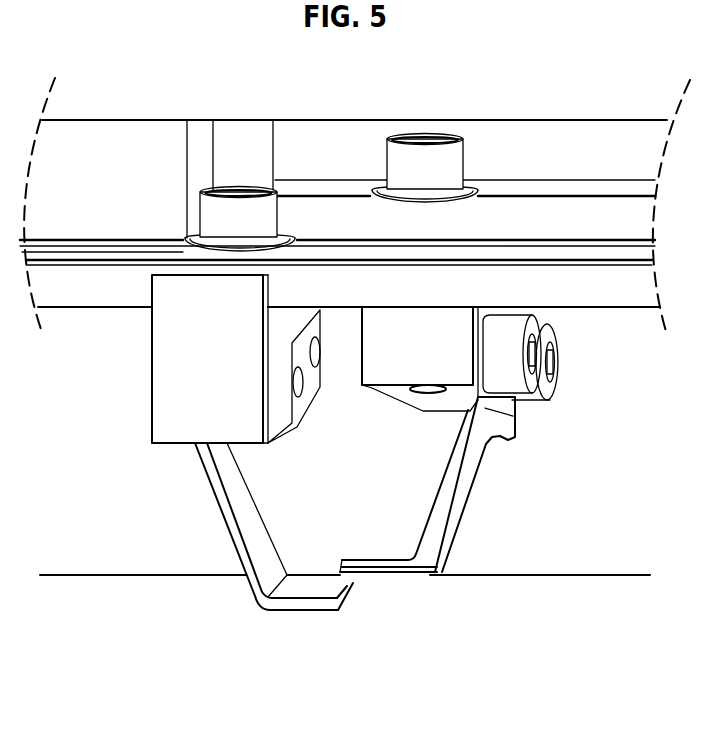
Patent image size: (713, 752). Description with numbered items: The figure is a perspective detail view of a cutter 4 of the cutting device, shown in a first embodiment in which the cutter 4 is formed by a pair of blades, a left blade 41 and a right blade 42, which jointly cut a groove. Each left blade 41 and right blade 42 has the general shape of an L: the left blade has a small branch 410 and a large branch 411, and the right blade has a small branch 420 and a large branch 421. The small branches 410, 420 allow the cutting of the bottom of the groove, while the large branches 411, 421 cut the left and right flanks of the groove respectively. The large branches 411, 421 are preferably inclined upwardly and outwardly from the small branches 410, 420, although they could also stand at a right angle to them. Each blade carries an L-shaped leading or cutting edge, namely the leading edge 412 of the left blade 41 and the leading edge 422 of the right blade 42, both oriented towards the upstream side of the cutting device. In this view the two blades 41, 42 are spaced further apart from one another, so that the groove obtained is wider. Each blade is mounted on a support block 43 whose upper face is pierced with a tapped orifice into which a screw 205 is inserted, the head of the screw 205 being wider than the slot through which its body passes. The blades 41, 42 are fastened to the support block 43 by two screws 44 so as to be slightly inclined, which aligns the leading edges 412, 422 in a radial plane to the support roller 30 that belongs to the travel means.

The cutter 4 is at (354, 570).
The support roller 30 is at (590, 573).
The left blade 41 is at (270, 571).
The right blade 42 is at (443, 548).
The support block 43 is at (208, 338).
The screws 44 is at (565, 363).
The screw 205 is at (425, 167).
The small branch of left blade 410 is at (314, 587).
The large branch of left blade 411 is at (247, 520).
The leading edge of left blade 412 is at (222, 520).
The small branch of right blade 420 is at (373, 559).
The large branch of right blade 421 is at (458, 474).
The leading edge of right blade 422 is at (450, 529).